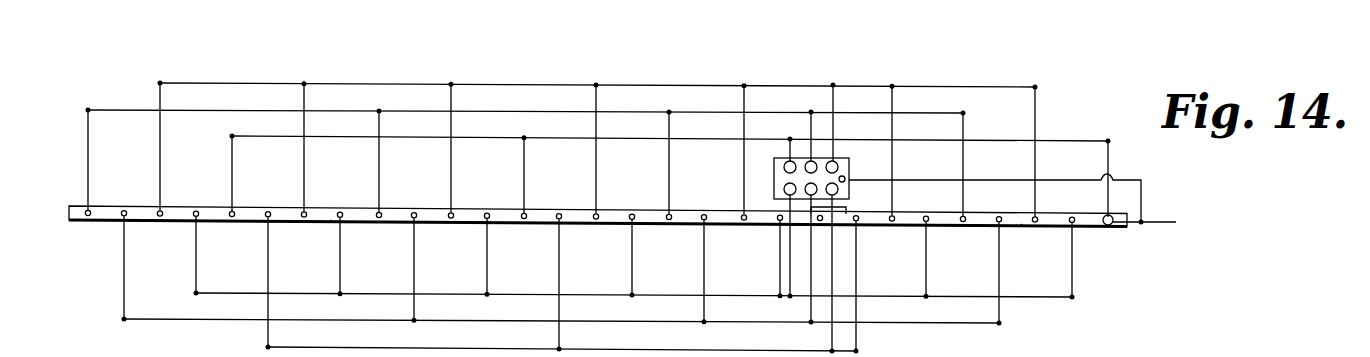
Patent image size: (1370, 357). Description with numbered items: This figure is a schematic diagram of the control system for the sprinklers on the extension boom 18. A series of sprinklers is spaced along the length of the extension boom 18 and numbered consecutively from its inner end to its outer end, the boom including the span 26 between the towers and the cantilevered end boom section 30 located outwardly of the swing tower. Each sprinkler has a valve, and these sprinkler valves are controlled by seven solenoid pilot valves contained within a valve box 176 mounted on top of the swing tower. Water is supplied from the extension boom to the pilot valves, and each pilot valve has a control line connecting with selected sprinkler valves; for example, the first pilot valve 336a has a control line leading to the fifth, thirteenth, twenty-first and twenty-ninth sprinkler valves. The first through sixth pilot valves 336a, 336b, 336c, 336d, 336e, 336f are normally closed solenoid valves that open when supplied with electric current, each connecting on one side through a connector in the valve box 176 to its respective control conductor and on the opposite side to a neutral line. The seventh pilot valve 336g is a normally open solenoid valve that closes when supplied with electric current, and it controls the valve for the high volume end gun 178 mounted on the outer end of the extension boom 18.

The extension boom 18 is at (106, 269).
The span 26 is at (330, 220).
The cantilevered end boom section 30 is at (1021, 224).
The valve box 176 is at (774, 181).
The high volume end gun 178 is at (1164, 222).
The No. 1 pilot valve 336a is at (783, 168).
The No. 2 pilot valve 336b is at (806, 162).
The No. 3 pilot valve 336c is at (834, 160).
The No. 4 pilot valve 336d is at (796, 197).
The No. 5 pilot valve 336e is at (815, 196).
The No. 6 pilot valve 336f is at (849, 188).
The No. 7 pilot valve 336g is at (846, 176).